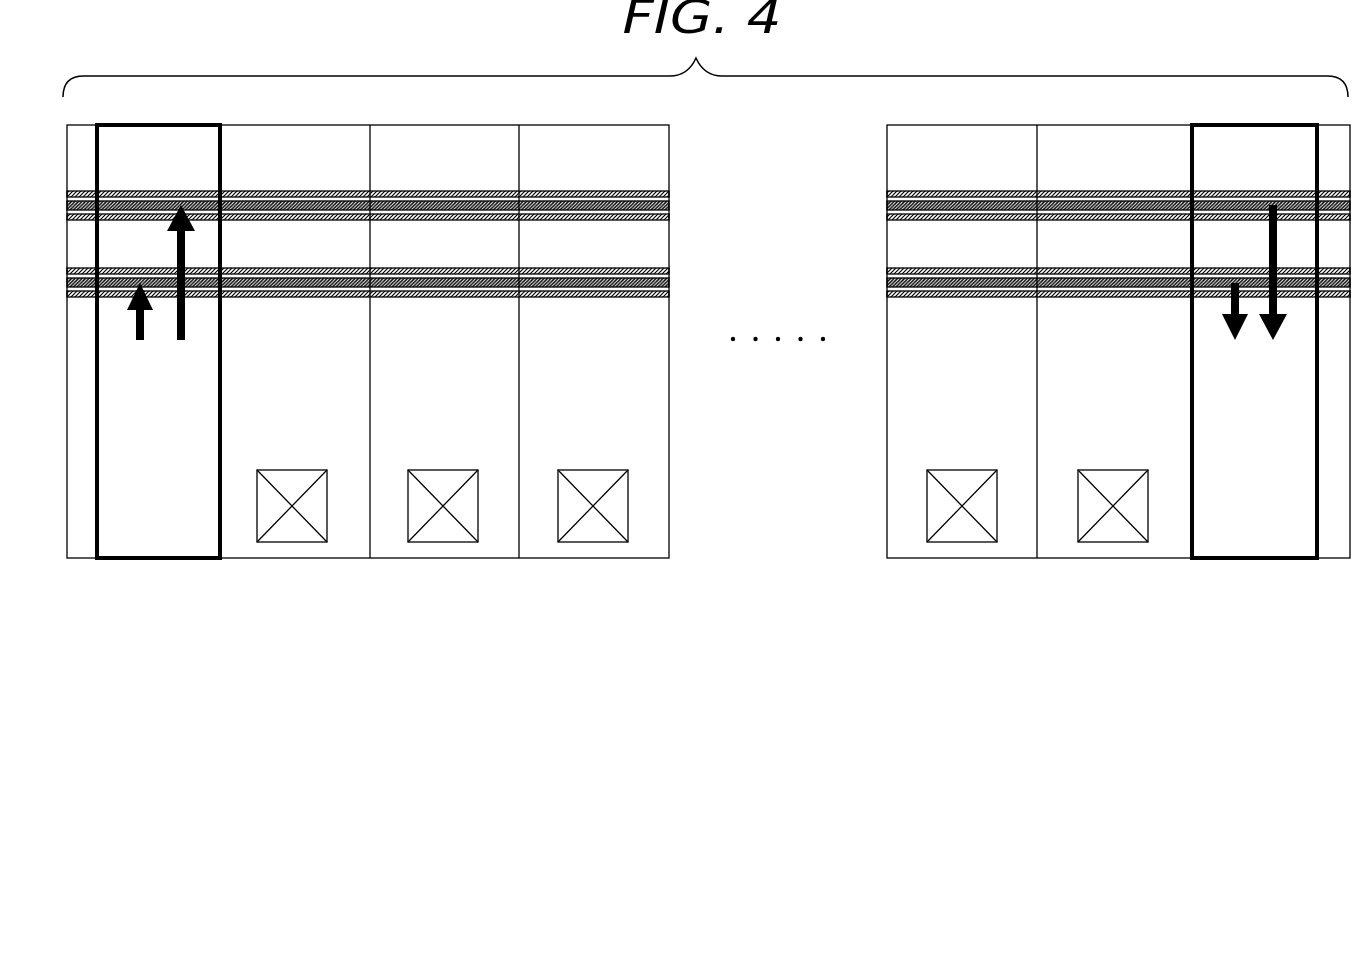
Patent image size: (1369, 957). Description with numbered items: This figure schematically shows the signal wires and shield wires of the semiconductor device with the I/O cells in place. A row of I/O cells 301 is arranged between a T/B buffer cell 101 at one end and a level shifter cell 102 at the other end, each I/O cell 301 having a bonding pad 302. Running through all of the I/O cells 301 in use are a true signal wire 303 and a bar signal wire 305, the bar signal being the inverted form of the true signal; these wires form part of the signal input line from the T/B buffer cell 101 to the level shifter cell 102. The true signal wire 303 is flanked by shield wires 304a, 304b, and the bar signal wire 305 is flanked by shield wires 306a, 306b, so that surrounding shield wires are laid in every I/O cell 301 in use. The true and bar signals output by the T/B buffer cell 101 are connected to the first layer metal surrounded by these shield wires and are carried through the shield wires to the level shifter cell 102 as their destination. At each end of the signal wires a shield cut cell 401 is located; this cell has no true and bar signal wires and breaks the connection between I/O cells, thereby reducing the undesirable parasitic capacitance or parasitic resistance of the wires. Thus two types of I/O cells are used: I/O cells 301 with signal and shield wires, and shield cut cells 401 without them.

The T/B buffer cell 101 is at (157, 560).
The level shifter cell 102 is at (1250, 560).
The I/O cell 301 is at (593, 559).
The bonding pad 302 is at (628, 508).
The true signal wire 303 is at (669, 282).
The shield wire 304a is at (669, 271).
The shield wire 304b is at (669, 294).
The bar signal wire 305 is at (669, 205).
The shield wire 306a is at (669, 194).
The shield wire 306b is at (669, 217).
The shield cut cell 401 is at (80, 560).